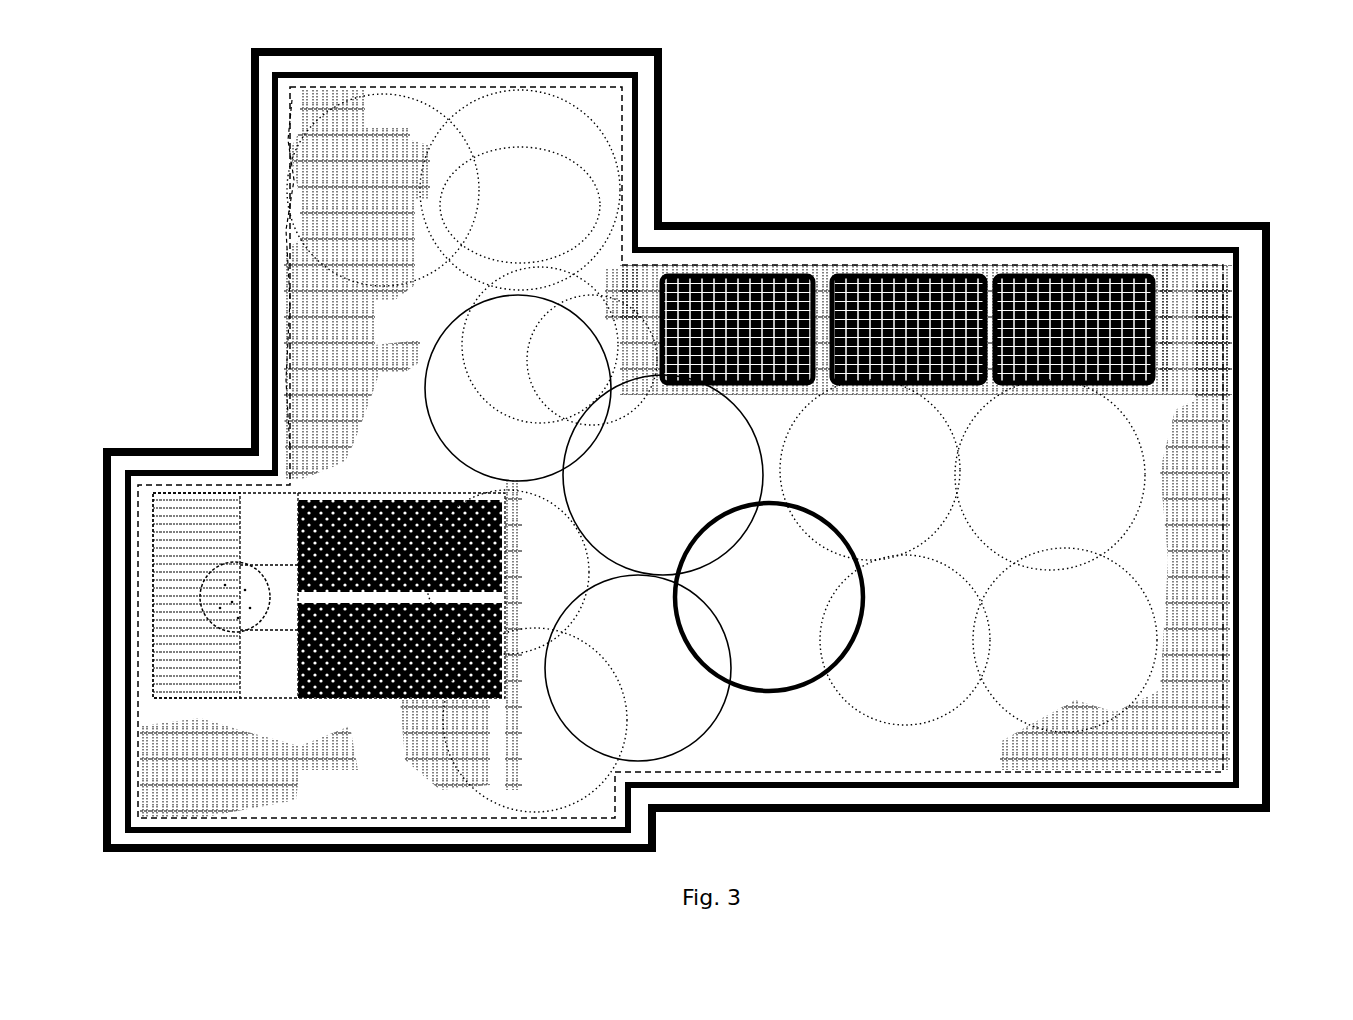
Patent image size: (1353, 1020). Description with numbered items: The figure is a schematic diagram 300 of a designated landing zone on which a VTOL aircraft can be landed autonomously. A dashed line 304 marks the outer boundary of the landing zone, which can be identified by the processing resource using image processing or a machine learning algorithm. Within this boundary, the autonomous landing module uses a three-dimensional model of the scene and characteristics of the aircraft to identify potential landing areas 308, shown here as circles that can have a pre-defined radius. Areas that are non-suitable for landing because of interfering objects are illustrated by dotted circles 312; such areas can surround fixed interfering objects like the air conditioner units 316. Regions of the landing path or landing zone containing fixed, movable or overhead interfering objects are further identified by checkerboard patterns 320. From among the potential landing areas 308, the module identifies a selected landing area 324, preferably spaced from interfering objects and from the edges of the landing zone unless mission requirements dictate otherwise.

The schematic diagram 300 is at (822, 113).
The dashed line 304 is at (757, 267).
The potential landing areas 308 is at (1120, 422).
The dotted circles 312 is at (603, 108).
The air conditioner units 316 is at (917, 275).
The checkerboard patterns 320 is at (333, 230).
The selected landing area 324 is at (780, 693).